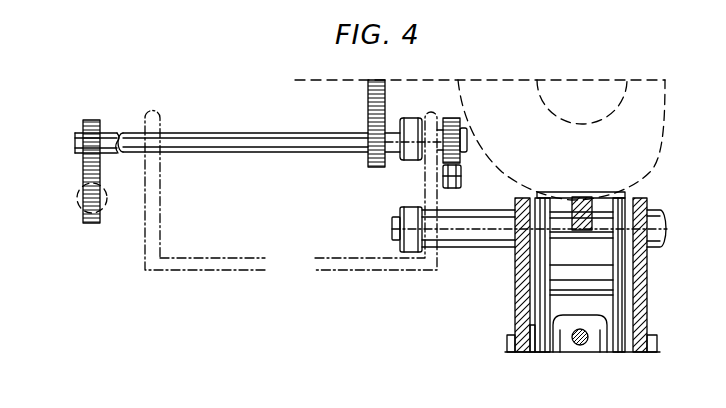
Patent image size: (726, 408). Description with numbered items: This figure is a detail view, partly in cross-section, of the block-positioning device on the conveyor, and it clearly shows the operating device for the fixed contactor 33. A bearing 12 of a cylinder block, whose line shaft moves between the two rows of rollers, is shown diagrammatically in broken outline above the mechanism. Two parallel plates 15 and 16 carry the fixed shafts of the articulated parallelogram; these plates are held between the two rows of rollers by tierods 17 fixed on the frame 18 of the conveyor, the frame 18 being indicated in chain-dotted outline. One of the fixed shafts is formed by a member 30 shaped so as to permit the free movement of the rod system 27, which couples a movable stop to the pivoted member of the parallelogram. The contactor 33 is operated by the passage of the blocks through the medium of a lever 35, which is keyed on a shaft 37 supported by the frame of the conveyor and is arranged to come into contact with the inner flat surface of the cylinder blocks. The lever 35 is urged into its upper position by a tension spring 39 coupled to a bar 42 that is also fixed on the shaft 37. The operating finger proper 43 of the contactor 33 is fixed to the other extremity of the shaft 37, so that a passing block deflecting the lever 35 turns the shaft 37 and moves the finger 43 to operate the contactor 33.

The bearing 12 is at (643, 156).
The parallel plate 15 is at (640, 281).
The parallel plate 16 is at (517, 277).
The tierod 17 is at (478, 242).
The frame 18 is at (312, 262).
The rod system 27 is at (577, 348).
The member 30 is at (603, 346).
The fixed contactor 33 is at (80, 205).
The lever 35 is at (368, 103).
The shaft 37 is at (293, 137).
The tension spring 39 is at (451, 191).
The bar 42 is at (457, 154).
The operating finger 43 is at (92, 150).